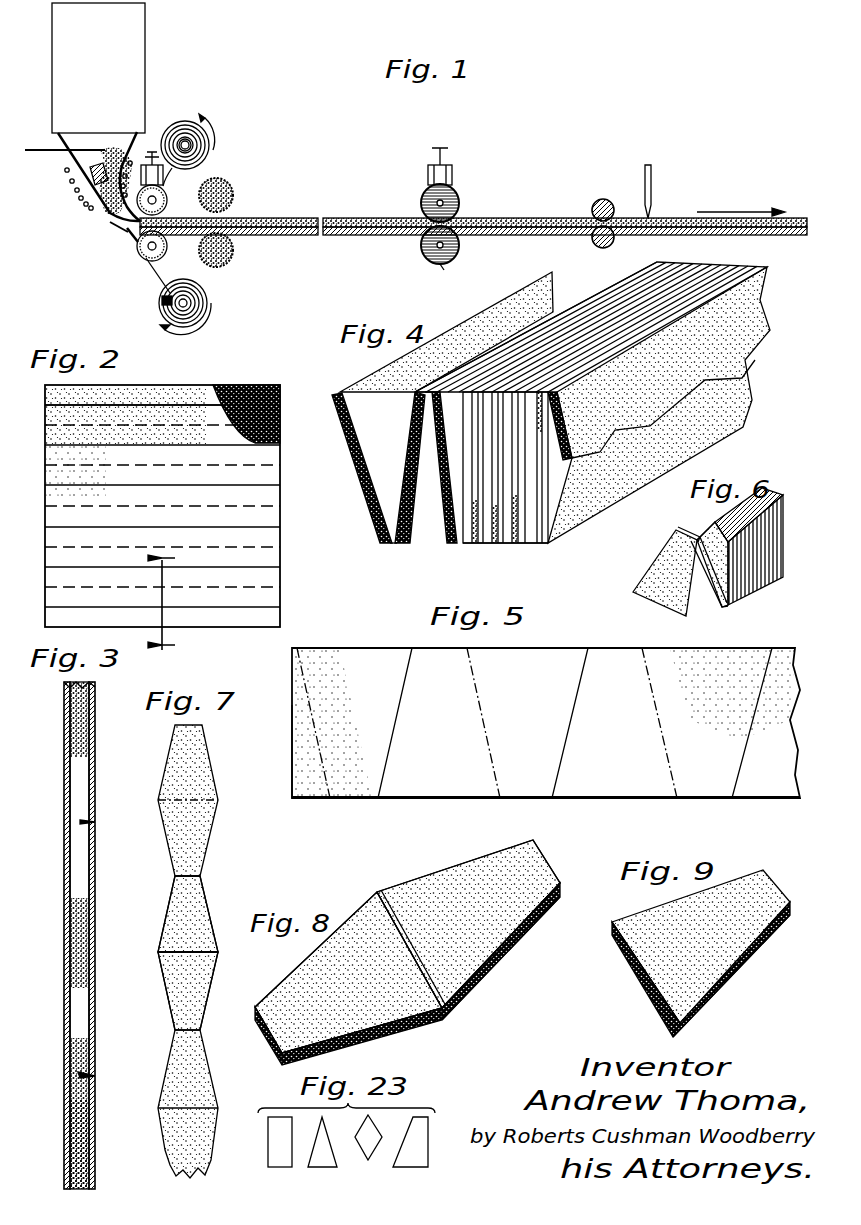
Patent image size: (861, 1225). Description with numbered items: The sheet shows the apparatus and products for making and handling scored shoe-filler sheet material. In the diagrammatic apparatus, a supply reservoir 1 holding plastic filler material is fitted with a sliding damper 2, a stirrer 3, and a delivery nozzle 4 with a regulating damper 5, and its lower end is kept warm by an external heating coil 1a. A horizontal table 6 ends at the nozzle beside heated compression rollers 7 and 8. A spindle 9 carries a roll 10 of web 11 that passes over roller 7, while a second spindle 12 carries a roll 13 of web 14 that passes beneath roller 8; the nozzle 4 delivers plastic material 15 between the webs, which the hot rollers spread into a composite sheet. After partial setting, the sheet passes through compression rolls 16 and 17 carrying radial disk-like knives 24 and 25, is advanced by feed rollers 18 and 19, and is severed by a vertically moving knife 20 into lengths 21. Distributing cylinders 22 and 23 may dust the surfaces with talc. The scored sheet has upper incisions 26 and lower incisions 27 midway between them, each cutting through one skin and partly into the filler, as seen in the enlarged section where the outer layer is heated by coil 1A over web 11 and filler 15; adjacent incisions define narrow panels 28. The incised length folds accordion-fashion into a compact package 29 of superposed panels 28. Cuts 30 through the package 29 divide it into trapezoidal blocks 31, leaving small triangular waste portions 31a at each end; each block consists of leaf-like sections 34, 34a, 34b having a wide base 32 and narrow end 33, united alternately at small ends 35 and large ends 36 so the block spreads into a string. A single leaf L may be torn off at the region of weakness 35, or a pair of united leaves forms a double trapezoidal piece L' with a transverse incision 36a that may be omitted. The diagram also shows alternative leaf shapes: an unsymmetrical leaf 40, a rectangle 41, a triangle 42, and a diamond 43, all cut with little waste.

In FIG. 1, the supply reservoir 1 is at (125, 100).
In FIG. 1, the external heating coil 1a is at (75, 190).
In FIG. 3, the external heating coil 1A is at (64, 1085).
In FIG. 1, the sliding damper 2 is at (50, 150).
In FIG. 1, the stirrer 3 is at (90, 170).
In FIG. 2, the stirrer 3 is at (167, 601).
In FIG. 1, the delivery nozzle 4 is at (134, 240).
In FIG. 1, the regulating damper 5 is at (118, 228).
In FIG. 1, the table 6 is at (350, 236).
In FIG. 1, the heated compression roller 7 is at (168, 250).
In FIG. 1, the heated compression roller 8 is at (167, 196).
In FIG. 1, the spindle 9 is at (162, 300).
In FIG. 1, the roll 10 is at (160, 308).
In FIG. 1, the web 11 is at (305, 236).
In FIG. 3, the web 11 is at (96, 1142).
In FIG. 1, the second spindle 12 is at (196, 136).
In FIG. 1, the roll 13 is at (206, 151).
In FIG. 1, the web 14 is at (148, 165).
In FIG. 1, the plastic filler material 15 is at (246, 218).
In FIG. 3, the plastic filler material 15 is at (100, 1106).
In FIG. 1, the compression roll 16 is at (452, 177).
In FIG. 1, the compression roll 17 is at (446, 266).
In FIG. 1, the feed roller 18 is at (606, 199).
In FIG. 1, the feed roller 19 is at (598, 248).
In FIG. 1, the vertically moving knife 20 is at (652, 188).
In FIG. 2, the sheet length 21 is at (212, 386).
In FIG. 1, the distributing cylinder 22 is at (222, 178).
In FIG. 1, the distributing cylinder 23 is at (236, 253).
In FIG. 1, the radial disk-like knives 24 is at (460, 207).
In FIG. 1, the radial disk-like knives 25 is at (460, 248).
In FIG. 2, the upper incisions 26 is at (95, 405).
In FIG. 3, the upper incisions 26 is at (70, 710).
In FIG. 4, the upper incisions 26 is at (393, 543).
In FIG. 2, the lower incisions 27 is at (140, 420).
In FIG. 3, the lower incisions 27 is at (95, 822).
In FIG. 4, the lower incisions 27 is at (427, 394).
In FIG. 2, the panel 28 is at (283, 458).
In FIG. 3, the panel 28 is at (97, 705).
In FIG. 4, the panel 28 is at (352, 462).
In FIG. 4, the package 29 is at (548, 548).
In FIG. 6, the package 29 is at (612, 615).
In FIG. 5, the package 29 is at (582, 636).
In FIG. 5, the cut lines 30 is at (400, 700).
In FIG. 6, the block 31 is at (730, 600).
In FIG. 5, the block 31 is at (360, 775).
In FIG. 5, the triangular waste portion 31a is at (302, 773).
In FIG. 5, the wide base 32 is at (315, 648).
In FIG. 9, the wide base 32 is at (640, 990).
In FIG. 5, the narrow end 33 is at (362, 798).
In FIG. 8, the narrow end 33 is at (548, 850).
In FIG. 9, the narrow end 33 is at (775, 890).
In FIG. 6, the filler leaf 34 is at (670, 565).
In FIG. 7, the filler leaf 34 is at (197, 852).
In FIG. 8, the filler leaf 34 is at (380, 1002).
In FIG. 6, the filler leaf 34a is at (705, 592).
In FIG. 7, the filler leaf 34a is at (197, 912).
In FIG. 8, the filler leaf 34a is at (490, 965).
In FIG. 6, the filler leaf 34b is at (706, 532).
In FIG. 7, the filler leaf 34b is at (208, 988).
In FIG. 6, the small-end union 35 is at (690, 537).
In FIG. 7, the small-end union 35 is at (202, 873).
In FIG. 6, the large-end union 36 is at (726, 608).
In FIG. 7, the large-end union 36 is at (220, 951).
In FIG. 8, the large-end union 36 is at (452, 1010).
In FIG. 8, the transverse incision 36a is at (480, 982).
In FIG. 23, the unsymmetrical leaf 40 is at (415, 1160).
In FIG. 23, the rectangular leaf 41 is at (270, 1162).
In FIG. 23, the triangular leaf 42 is at (325, 1162).
In FIG. 23, the diamond leaf 43 is at (367, 1160).
In FIG. 9, the filler leaf L is at (731, 976).
In FIG. 8, the double trapezoidal filler package L' is at (411, 931).